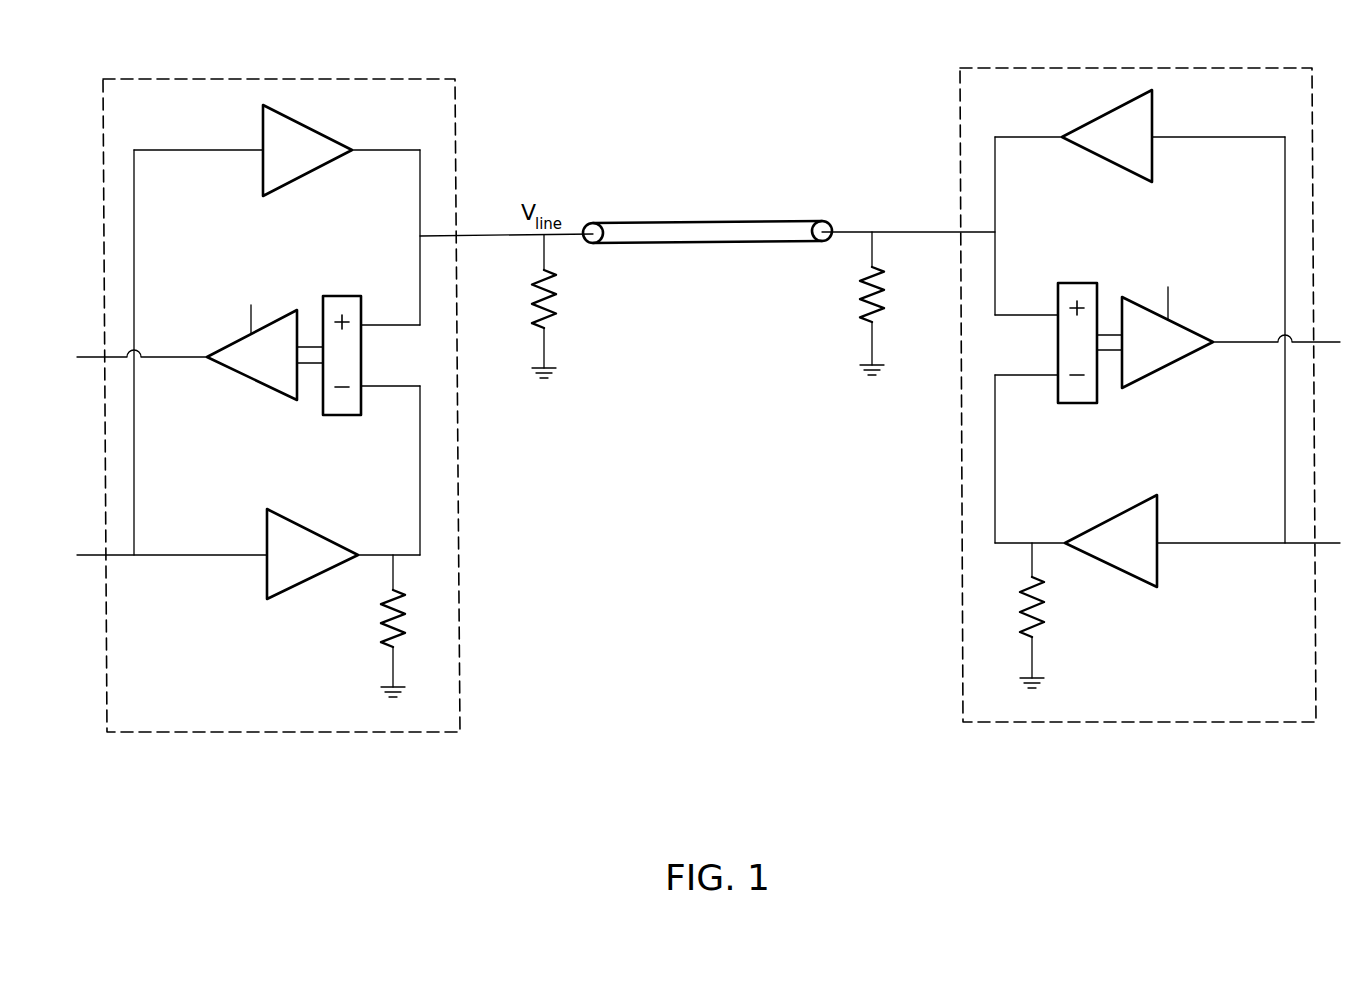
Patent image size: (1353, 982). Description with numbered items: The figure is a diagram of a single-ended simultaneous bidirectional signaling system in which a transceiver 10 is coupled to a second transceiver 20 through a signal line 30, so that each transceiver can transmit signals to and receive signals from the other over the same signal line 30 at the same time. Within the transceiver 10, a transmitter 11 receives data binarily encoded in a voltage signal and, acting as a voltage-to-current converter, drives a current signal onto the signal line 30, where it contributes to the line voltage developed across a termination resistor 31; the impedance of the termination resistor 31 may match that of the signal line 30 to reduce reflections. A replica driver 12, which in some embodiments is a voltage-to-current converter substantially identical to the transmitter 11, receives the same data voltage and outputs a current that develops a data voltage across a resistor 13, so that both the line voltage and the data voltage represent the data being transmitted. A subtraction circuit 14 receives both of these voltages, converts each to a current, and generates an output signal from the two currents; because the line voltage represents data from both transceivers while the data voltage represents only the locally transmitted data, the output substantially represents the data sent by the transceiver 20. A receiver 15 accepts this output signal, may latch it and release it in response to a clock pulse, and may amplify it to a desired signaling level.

The transceiver 10 is at (300, 78).
The transmitter 11 is at (321, 131).
The replica driver 12 is at (310, 529).
The resistor 13 is at (376, 626).
The subtraction circuit 14 is at (343, 295).
The receiver 15 is at (252, 383).
The transceiver 20 is at (1158, 67).
The signal line 30 is at (764, 221).
The termination resistor 31 is at (567, 306).